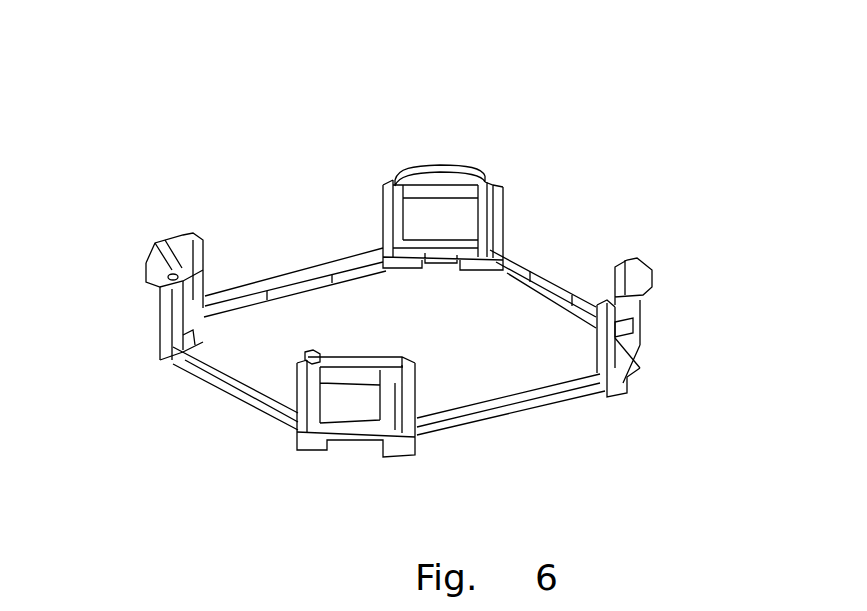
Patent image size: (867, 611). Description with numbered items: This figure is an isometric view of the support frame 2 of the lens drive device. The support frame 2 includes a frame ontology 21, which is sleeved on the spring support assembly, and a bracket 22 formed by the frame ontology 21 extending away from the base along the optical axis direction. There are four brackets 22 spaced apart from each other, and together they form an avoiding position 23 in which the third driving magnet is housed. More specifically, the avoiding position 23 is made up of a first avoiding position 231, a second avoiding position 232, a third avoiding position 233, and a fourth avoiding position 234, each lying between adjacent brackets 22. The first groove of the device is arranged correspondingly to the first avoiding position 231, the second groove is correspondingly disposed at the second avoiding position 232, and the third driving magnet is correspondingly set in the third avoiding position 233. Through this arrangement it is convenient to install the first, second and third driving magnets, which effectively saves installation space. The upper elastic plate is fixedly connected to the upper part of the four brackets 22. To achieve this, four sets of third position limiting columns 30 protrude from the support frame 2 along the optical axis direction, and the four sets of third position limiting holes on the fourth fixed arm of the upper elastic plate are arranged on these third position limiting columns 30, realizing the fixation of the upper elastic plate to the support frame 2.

The support frame 2 is at (350, 65).
The frame ontology 21 is at (532, 277).
The bracket 22 is at (648, 303).
The avoiding position 23 is at (623, 368).
The third position limiting column 30 is at (303, 360).
The first avoiding position 231 is at (524, 241).
The second avoiding position 232 is at (309, 240).
The third avoiding position 233 is at (207, 376).
The fourth avoiding position 234 is at (530, 403).